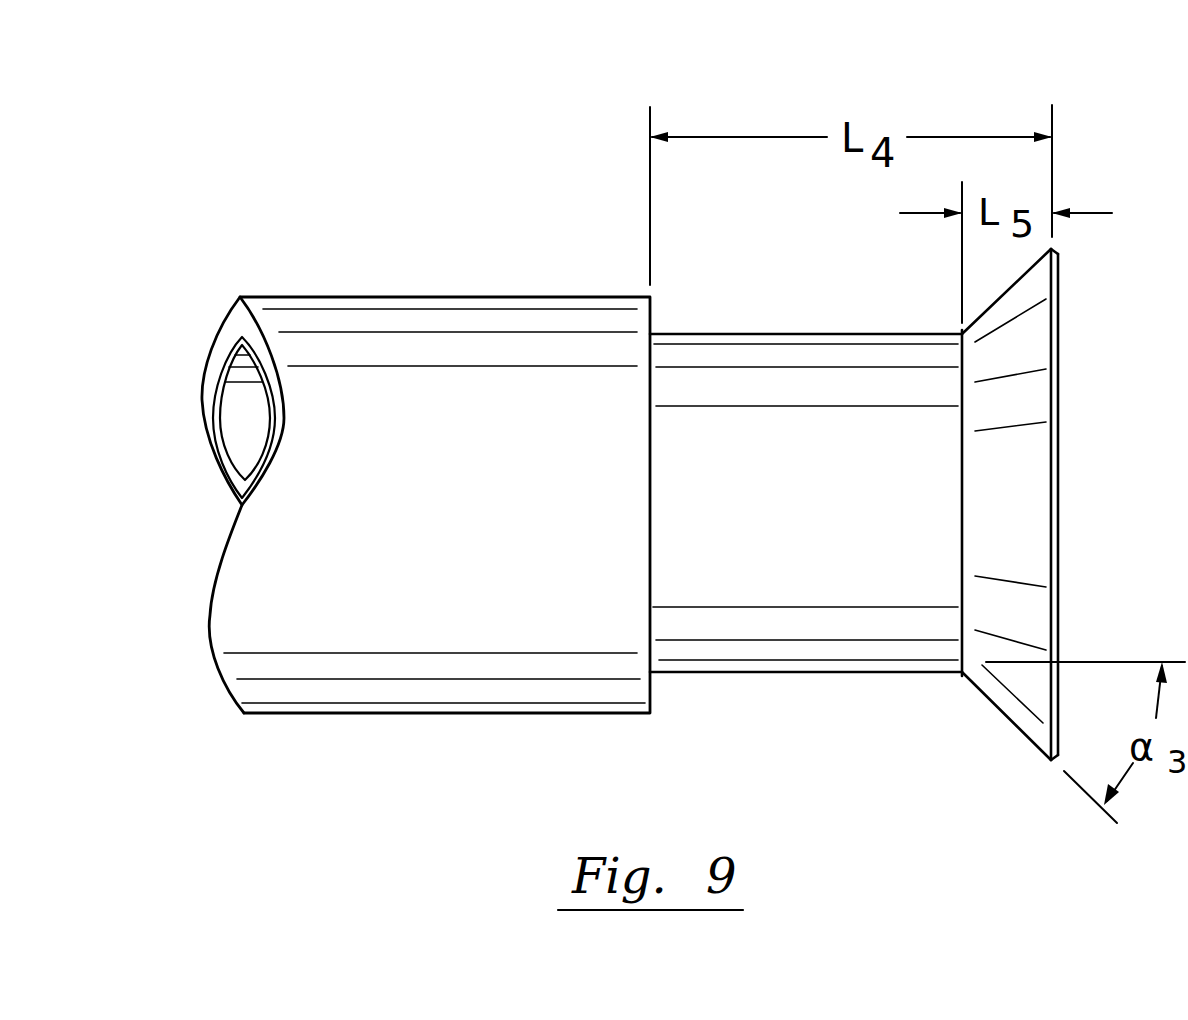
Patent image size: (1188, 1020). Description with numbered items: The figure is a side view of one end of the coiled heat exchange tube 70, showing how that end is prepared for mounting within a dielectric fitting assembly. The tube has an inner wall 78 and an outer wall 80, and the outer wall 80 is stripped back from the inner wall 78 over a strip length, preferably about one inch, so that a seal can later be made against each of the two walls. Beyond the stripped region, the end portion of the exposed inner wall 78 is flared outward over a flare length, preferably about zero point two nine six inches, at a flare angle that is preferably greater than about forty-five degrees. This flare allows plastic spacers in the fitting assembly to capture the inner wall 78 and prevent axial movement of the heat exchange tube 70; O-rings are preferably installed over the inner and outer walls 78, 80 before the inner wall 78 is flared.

The heat exchange tube 70 is at (630, 408).
The inner wall 78 is at (1005, 718).
The outer wall 80 is at (417, 295).